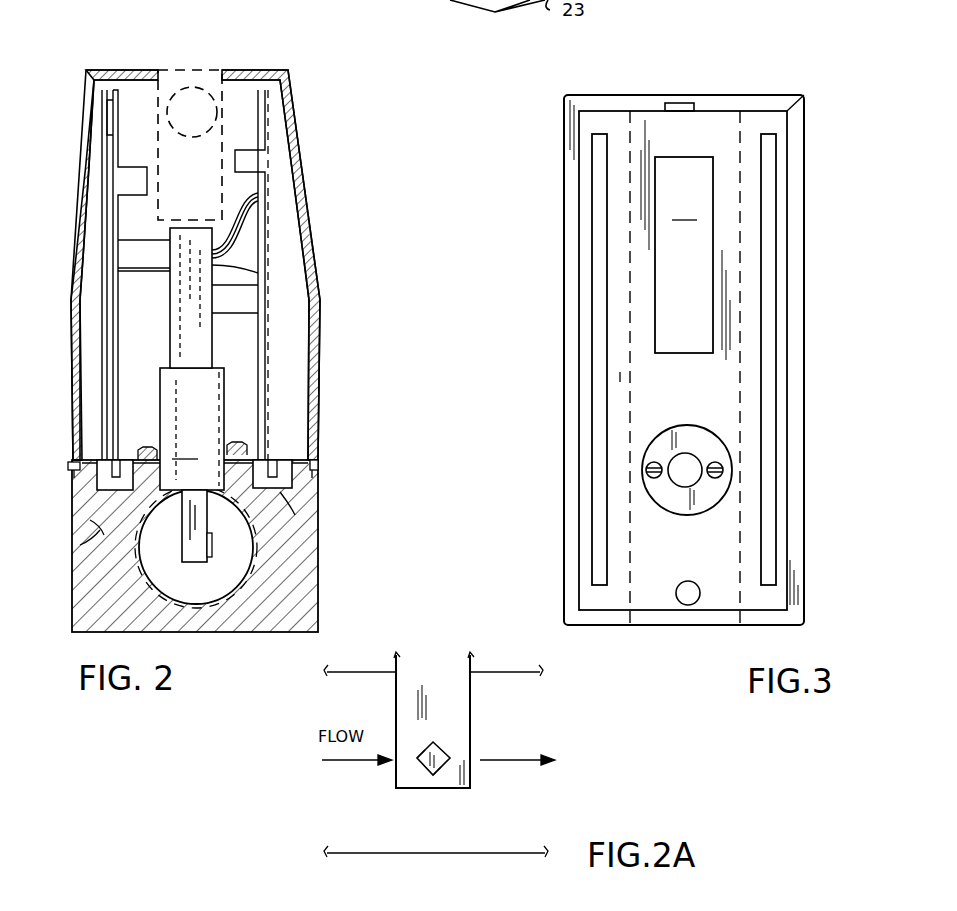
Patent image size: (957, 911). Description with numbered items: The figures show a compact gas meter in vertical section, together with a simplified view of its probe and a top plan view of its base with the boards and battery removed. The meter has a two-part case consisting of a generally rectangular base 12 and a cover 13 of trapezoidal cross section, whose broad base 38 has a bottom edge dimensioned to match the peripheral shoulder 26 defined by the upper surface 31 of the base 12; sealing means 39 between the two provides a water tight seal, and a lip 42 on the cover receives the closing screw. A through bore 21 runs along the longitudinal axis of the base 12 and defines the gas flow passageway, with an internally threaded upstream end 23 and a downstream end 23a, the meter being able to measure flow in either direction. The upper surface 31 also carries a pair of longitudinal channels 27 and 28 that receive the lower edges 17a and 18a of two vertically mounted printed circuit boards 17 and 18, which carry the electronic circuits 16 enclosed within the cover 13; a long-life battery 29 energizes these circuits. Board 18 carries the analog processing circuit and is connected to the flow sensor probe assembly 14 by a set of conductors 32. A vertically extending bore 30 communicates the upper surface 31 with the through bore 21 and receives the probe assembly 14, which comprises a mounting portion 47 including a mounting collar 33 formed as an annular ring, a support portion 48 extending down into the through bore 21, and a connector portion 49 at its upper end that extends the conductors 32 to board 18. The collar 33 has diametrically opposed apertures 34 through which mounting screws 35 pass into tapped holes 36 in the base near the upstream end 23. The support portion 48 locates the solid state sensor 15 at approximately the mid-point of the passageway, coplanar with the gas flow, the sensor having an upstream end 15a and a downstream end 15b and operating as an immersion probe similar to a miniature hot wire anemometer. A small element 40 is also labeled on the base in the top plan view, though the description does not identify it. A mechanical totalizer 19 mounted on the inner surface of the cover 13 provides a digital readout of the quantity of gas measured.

In FIG. 2, the base 12 is at (70, 590).
In FIG. 3, the base 12 is at (815, 356).
In FIG. 2, the cover 13 is at (303, 217).
In FIG. 2, the flow sensor probe assembly 14 is at (240, 362).
In FIG. 2, the solid state sensor 15 is at (208, 520).
In FIG. 2A, the solid state sensor 15 is at (442, 752).
In FIG. 2A, the upstream end 15a is at (418, 762).
In FIG. 2A, the downstream end 15b is at (436, 776).
In FIG. 2, the electronic circuits 16 is at (209, 55).
In FIG. 2, the printed circuit board 17 is at (108, 232).
In FIG. 2, the lower edge 17a is at (68, 466).
In FIG. 2, the printed circuit board 18 is at (272, 192).
In FIG. 2, the lower edge 18a is at (318, 464).
In FIG. 2, the mechanical totalizer 19 is at (198, 100).
In FIG. 2, the through bore 21 is at (225, 578).
In FIG. 3, the through bore 21 is at (690, 644).
In FIG. 3, the upstream end 23 is at (615, 627).
In FIG. 3, the downstream end 23a is at (745, 95).
In FIG. 3, the peripheral shoulder 26 is at (577, 284).
In FIG. 2, the longitudinal channel 27 is at (100, 530).
In FIG. 3, the longitudinal channel 27 is at (592, 185).
In FIG. 2, the longitudinal channel 28 is at (282, 492).
In FIG. 3, the longitudinal channel 28 is at (776, 186).
In FIG. 3, the battery 29 is at (685, 240).
In FIG. 2, the vertically extending bore 30 is at (192, 429).
In FIG. 3, the vertically extending bore 30 is at (679, 462).
In FIG. 3, the upper surface 31 is at (620, 377).
In FIG. 2, the conductors 32 is at (217, 252).
In FIG. 2, the mounting collar 33 is at (123, 452).
In FIG. 3, the mounting collar 33 is at (727, 448).
In FIG. 3, the apertures 34 is at (713, 480).
In FIG. 2, the mounting screws 35 is at (145, 447).
In FIG. 2, the tapped holes 36 is at (80, 545).
In FIG. 2, the broad base 38 is at (72, 478).
In FIG. 2, the sealing means 39 is at (313, 475).
In FIG. 3, the tab 40 is at (673, 103).
In FIG. 3, the lip 42 is at (700, 593).
In FIG. 2, the mounting portion 47 is at (210, 405).
In FIG. 2, the support portion 48 is at (208, 545).
In FIG. 2A, the support portion 48 is at (470, 710).
In FIG. 2, the connector portion 49 is at (212, 265).